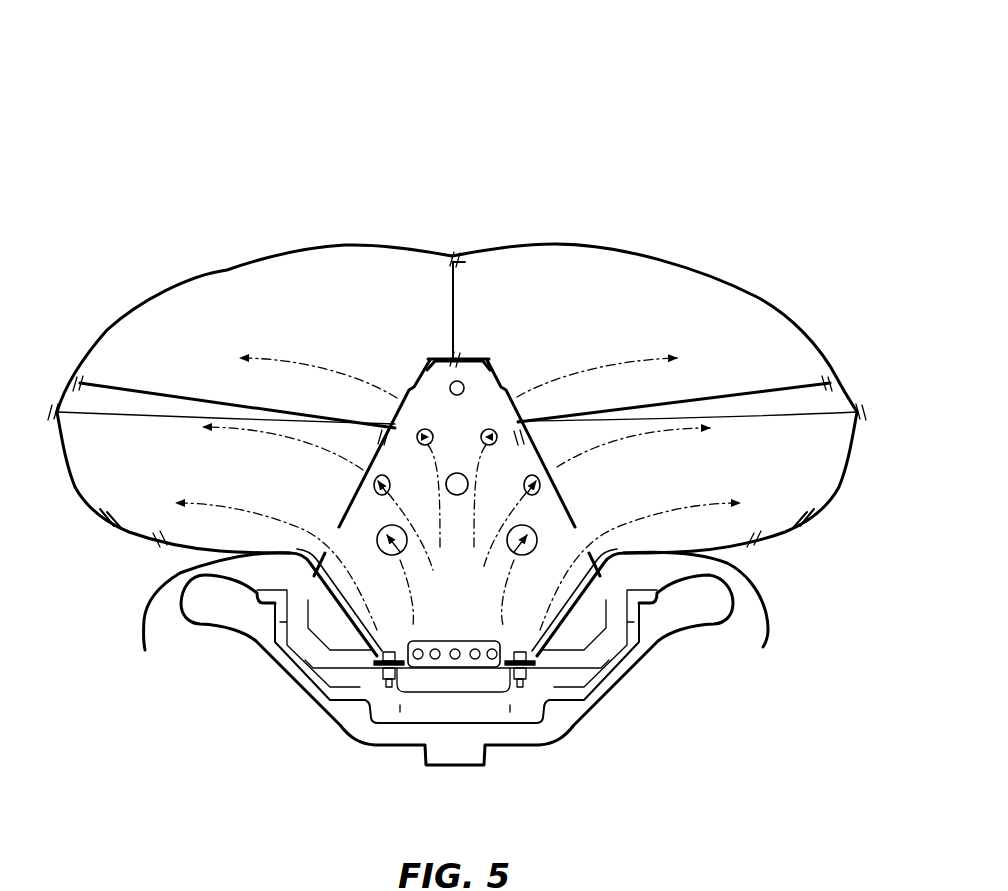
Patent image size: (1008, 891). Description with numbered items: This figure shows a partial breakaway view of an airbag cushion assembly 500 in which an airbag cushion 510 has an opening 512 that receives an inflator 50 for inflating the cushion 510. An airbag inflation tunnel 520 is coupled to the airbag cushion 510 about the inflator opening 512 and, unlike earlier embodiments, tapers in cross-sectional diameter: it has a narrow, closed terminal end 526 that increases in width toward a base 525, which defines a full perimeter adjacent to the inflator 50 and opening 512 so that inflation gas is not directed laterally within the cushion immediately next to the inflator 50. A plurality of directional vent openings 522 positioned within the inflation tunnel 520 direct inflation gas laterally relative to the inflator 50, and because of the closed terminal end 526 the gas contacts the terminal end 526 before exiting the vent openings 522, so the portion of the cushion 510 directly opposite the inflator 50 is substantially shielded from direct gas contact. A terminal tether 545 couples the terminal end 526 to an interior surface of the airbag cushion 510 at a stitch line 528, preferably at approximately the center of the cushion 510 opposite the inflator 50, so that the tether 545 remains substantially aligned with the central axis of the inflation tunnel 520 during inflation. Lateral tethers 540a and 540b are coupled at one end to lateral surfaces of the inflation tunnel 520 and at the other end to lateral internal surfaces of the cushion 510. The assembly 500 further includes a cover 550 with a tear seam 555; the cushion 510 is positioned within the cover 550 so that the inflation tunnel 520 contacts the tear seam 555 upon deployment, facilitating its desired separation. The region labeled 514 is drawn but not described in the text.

The airbag cushion assembly 500 is at (741, 140).
The airbag cushion 510 is at (757, 297).
The seat cushion surface 514 is at (212, 333).
The airbag inflation tunnel 520 is at (557, 493).
The directional vent openings 522 is at (468, 483).
The base 525 is at (584, 557).
The terminal end 526 is at (466, 361).
The stitch line 528 is at (460, 261).
The lateral tether 540a is at (763, 385).
The lateral tether 540b is at (162, 393).
The terminal tether 545 is at (452, 310).
The cover 550 is at (750, 588).
The tear seam 555 is at (763, 647).
The opening 512 is at (378, 675).
The inflator 50 is at (487, 660).